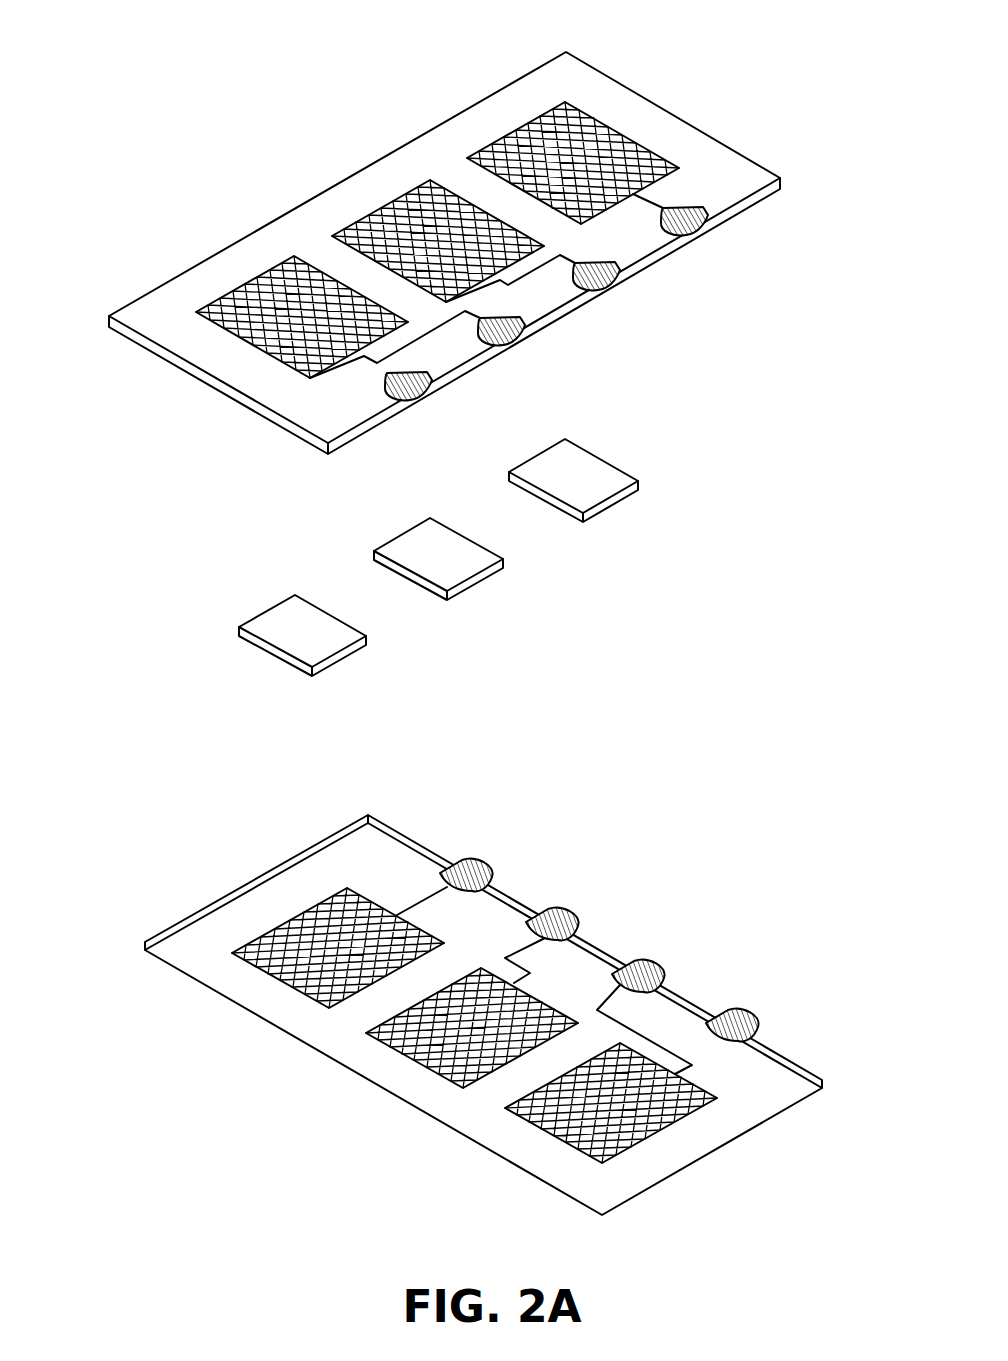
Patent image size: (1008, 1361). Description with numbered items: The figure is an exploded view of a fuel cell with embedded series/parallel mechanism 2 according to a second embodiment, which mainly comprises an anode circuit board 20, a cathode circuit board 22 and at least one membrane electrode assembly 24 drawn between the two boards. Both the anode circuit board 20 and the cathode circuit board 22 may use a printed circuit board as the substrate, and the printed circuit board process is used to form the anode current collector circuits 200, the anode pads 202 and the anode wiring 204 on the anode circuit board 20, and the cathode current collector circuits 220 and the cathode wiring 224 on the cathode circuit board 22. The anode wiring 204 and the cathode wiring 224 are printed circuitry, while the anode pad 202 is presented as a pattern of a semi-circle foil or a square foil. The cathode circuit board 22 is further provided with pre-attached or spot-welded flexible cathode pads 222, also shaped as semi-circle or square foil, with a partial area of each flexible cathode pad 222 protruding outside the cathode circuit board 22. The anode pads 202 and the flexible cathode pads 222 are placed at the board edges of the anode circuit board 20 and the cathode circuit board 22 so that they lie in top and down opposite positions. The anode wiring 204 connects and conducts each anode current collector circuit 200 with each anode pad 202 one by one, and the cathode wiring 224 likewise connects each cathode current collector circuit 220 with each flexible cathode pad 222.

The fuel cell with embedded series/parallel mechanism 2 is at (196, 95).
The anode circuit board 20 is at (180, 378).
The cathode circuit board 22 is at (243, 858).
The membrane electrode assembly 24 is at (296, 646).
The anode current collector circuit 200 is at (282, 300).
The anode pad 202 is at (410, 390).
The anode wiring 204 is at (664, 206).
The cathode current collector circuit 220 is at (330, 960).
The flexible cathode pad 222 is at (465, 858).
The cathode wiring 224 is at (397, 913).